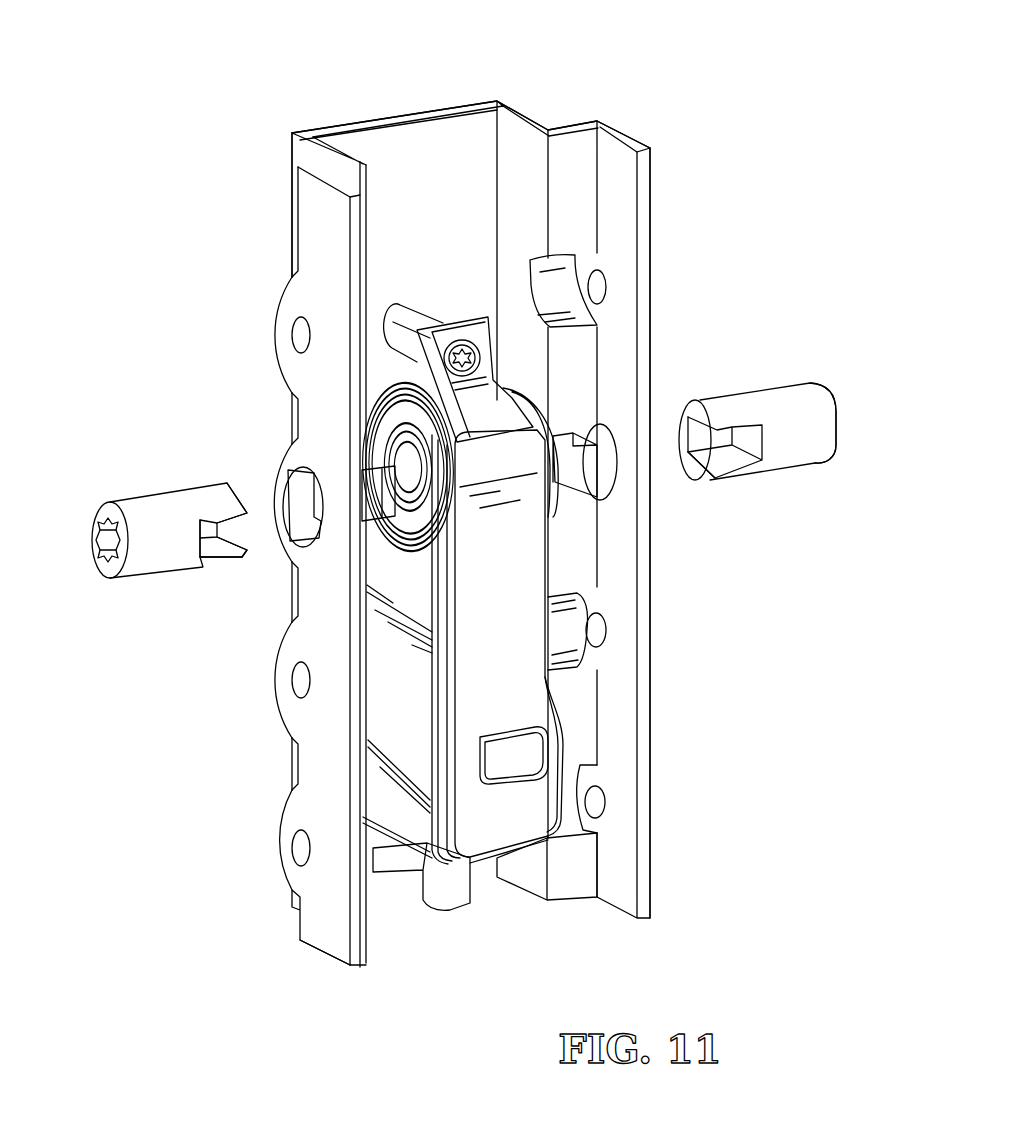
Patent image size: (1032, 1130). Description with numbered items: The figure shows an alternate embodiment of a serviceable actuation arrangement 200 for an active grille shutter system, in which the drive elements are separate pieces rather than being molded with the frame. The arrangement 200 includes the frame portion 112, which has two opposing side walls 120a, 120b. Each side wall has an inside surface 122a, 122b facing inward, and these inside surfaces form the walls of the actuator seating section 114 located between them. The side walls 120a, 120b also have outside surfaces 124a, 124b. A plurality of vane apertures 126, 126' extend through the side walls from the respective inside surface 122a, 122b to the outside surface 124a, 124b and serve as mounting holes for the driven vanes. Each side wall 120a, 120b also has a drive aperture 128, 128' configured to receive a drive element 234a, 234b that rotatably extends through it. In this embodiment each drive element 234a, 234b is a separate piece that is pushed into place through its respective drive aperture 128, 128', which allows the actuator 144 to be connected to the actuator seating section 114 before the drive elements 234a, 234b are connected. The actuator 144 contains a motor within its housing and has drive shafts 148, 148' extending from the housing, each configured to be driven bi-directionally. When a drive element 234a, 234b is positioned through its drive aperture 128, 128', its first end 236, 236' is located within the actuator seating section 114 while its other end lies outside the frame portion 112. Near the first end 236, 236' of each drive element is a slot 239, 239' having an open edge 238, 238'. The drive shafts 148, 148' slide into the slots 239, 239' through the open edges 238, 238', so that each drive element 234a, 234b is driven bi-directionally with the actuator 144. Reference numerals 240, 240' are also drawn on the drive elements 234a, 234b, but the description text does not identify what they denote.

The serviceable actuation arrangement 200 is at (268, 58).
The frame portion 112 is at (452, 130).
The actuator seating section 114 is at (476, 212).
The side wall 120a is at (325, 178).
The side wall 120b is at (630, 137).
The inside surface 122a is at (367, 295).
The inside surface 122b is at (613, 166).
The outside surface 124a is at (318, 757).
The outside surface 124b is at (652, 688).
The vane aperture 126 is at (262, 580).
The vane aperture 126' is at (623, 517).
The drive aperture 128 is at (267, 472).
The drive aperture 128' is at (641, 414).
The actuator 144 is at (527, 638).
The drive shaft 148 is at (442, 528).
The drive shaft 148' is at (629, 501).
The drive element 234a is at (150, 510).
The drive element 234b is at (845, 398).
The first end 236 is at (212, 597).
The first end 236' is at (725, 379).
The open edge 238 is at (194, 450).
The open edge 238' is at (771, 472).
The slot 239 is at (200, 588).
The slot 239' is at (724, 501).
The socket 240 is at (65, 502).
The socket 240' is at (875, 423).